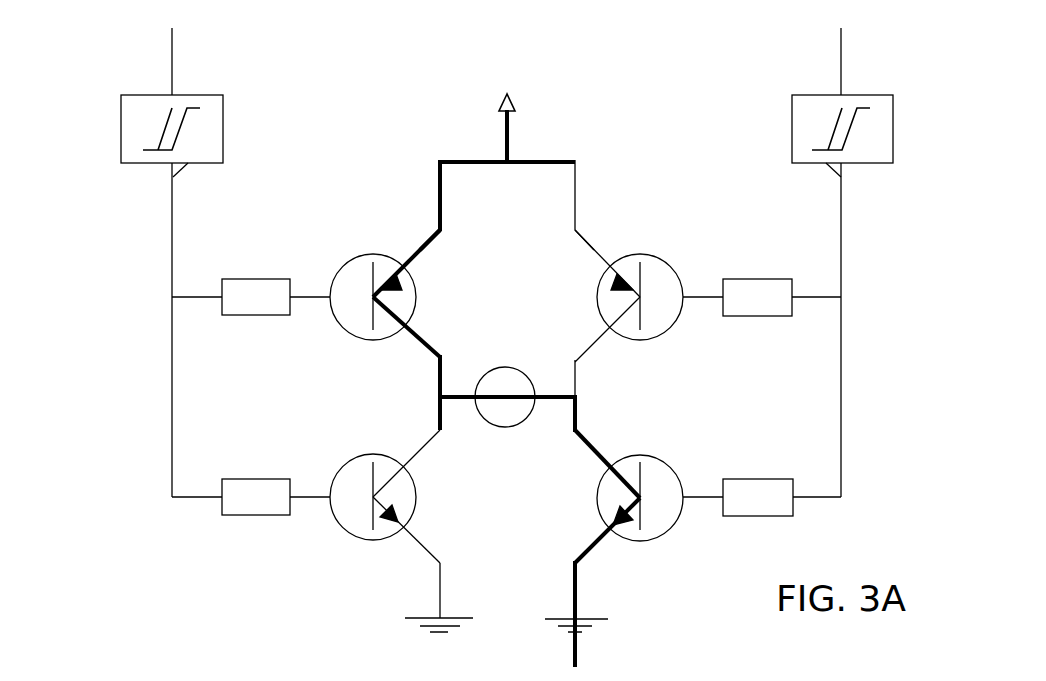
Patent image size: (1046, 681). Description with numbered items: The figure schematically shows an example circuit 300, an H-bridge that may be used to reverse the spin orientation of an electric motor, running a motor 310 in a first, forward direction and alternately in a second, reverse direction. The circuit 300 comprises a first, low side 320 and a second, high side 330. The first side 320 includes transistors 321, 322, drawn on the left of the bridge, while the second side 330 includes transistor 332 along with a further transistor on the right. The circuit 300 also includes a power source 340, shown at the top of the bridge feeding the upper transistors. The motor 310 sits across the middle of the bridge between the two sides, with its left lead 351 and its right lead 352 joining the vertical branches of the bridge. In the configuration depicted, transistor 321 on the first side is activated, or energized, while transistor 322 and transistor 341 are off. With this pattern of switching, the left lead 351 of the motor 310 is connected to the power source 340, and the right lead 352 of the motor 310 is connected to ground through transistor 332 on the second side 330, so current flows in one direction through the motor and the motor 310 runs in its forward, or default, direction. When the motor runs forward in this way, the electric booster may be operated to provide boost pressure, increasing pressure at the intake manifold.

The circuit 300 is at (326, 66).
The motor 310 is at (525, 347).
The first (LO) side 320 is at (110, 70).
The second (HI) side 330 is at (894, 70).
The power source 340 is at (512, 99).
The transistor 321 is at (362, 253).
The transistor 341 is at (657, 253).
The transistor 322 is at (360, 455).
The transistor 332 is at (663, 455).
The left lead 351 is at (474, 399).
The right lead 352 is at (538, 399).